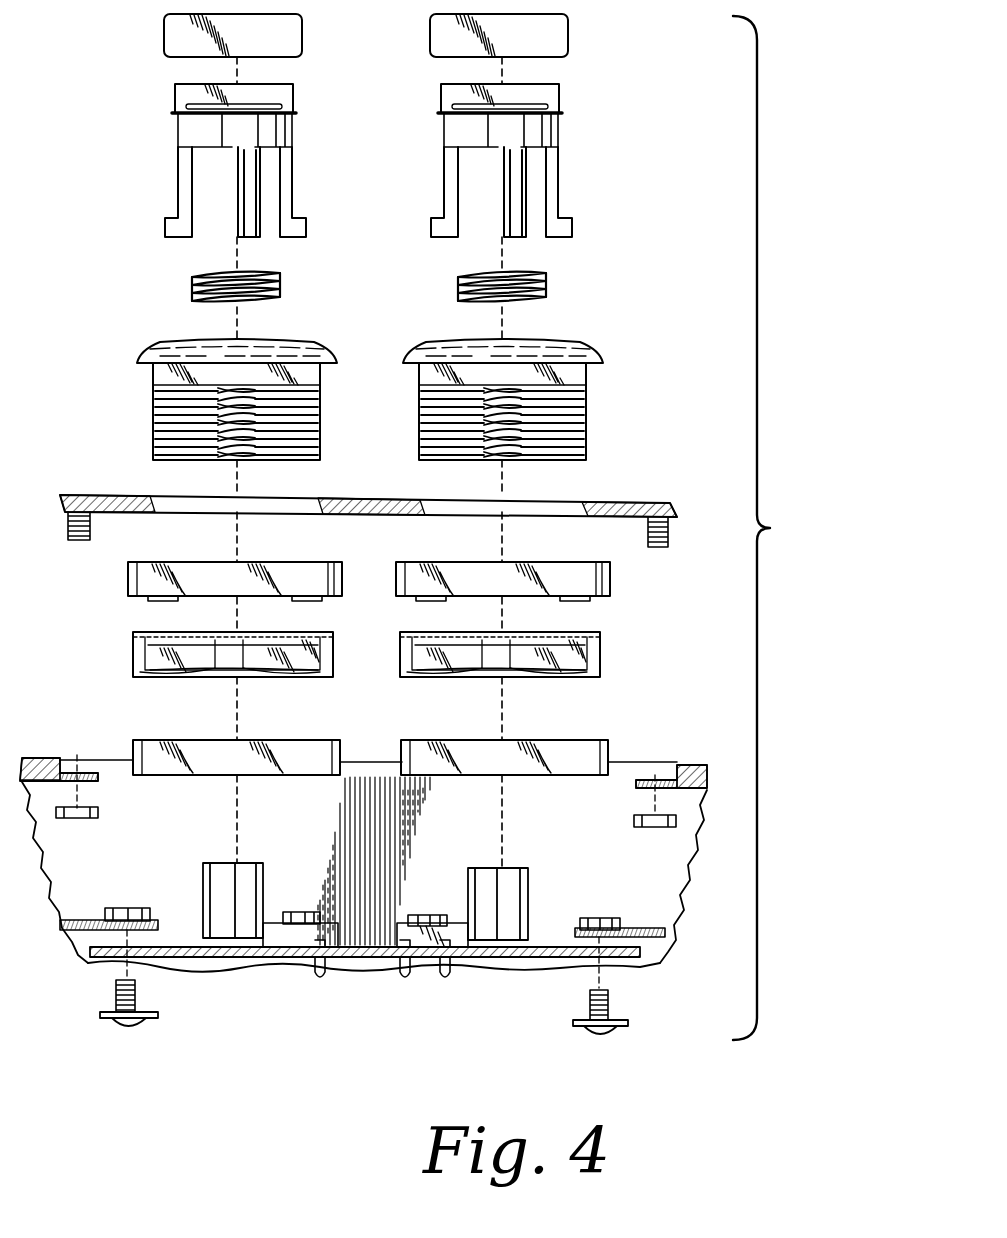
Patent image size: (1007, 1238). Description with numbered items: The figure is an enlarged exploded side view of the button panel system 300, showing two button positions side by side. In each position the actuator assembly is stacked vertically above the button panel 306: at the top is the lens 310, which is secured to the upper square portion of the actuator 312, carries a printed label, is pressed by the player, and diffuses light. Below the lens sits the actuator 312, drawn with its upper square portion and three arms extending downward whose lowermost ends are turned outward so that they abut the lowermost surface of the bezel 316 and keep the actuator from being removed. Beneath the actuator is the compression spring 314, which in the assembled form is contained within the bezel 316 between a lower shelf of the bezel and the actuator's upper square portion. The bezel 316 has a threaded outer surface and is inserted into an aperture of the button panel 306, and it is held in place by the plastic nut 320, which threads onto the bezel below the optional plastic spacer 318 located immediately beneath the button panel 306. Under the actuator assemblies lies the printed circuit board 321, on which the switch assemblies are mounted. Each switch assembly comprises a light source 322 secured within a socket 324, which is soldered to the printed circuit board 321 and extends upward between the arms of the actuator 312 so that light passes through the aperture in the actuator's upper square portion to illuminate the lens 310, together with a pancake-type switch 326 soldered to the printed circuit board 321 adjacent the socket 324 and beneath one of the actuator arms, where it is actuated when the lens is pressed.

The button panel system 300 is at (786, 522).
The button panel 306 is at (636, 503).
The lens 310 is at (568, 40).
The actuator 312 is at (549, 133).
The compression spring 314 is at (546, 284).
The bezel 316 is at (586, 368).
The plastic spacer 318 is at (610, 585).
The plastic nut 320 is at (602, 658).
The printed circuit board 321 is at (548, 950).
The light source 322 is at (662, 727).
The socket 324 is at (521, 942).
The switch 326 is at (470, 950).